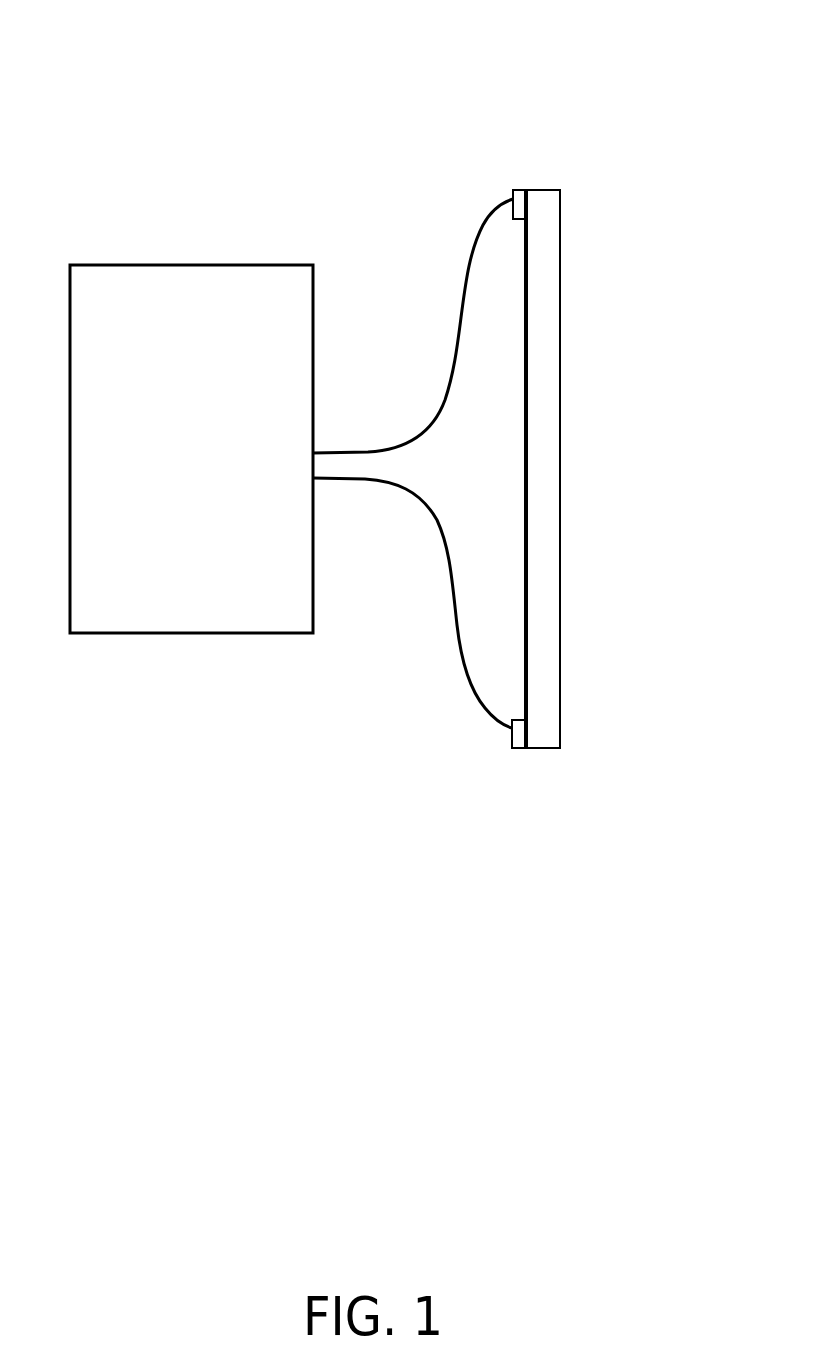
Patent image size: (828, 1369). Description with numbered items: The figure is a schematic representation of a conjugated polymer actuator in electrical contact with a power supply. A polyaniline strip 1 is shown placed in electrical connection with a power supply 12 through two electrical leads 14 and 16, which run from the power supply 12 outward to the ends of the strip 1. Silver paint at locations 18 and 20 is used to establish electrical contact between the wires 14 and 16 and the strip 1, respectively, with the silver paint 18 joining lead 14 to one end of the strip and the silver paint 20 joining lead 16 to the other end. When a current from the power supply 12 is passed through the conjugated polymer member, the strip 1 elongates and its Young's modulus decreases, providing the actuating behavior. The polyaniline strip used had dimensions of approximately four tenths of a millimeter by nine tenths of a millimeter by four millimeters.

The polyaniline strip 1 is at (560, 470).
The power supply 12 is at (162, 463).
The electrical lead 14 is at (470, 253).
The electrical lead 16 is at (452, 650).
The silver paint location 18 is at (513, 192).
The silver paint location 20 is at (512, 752).